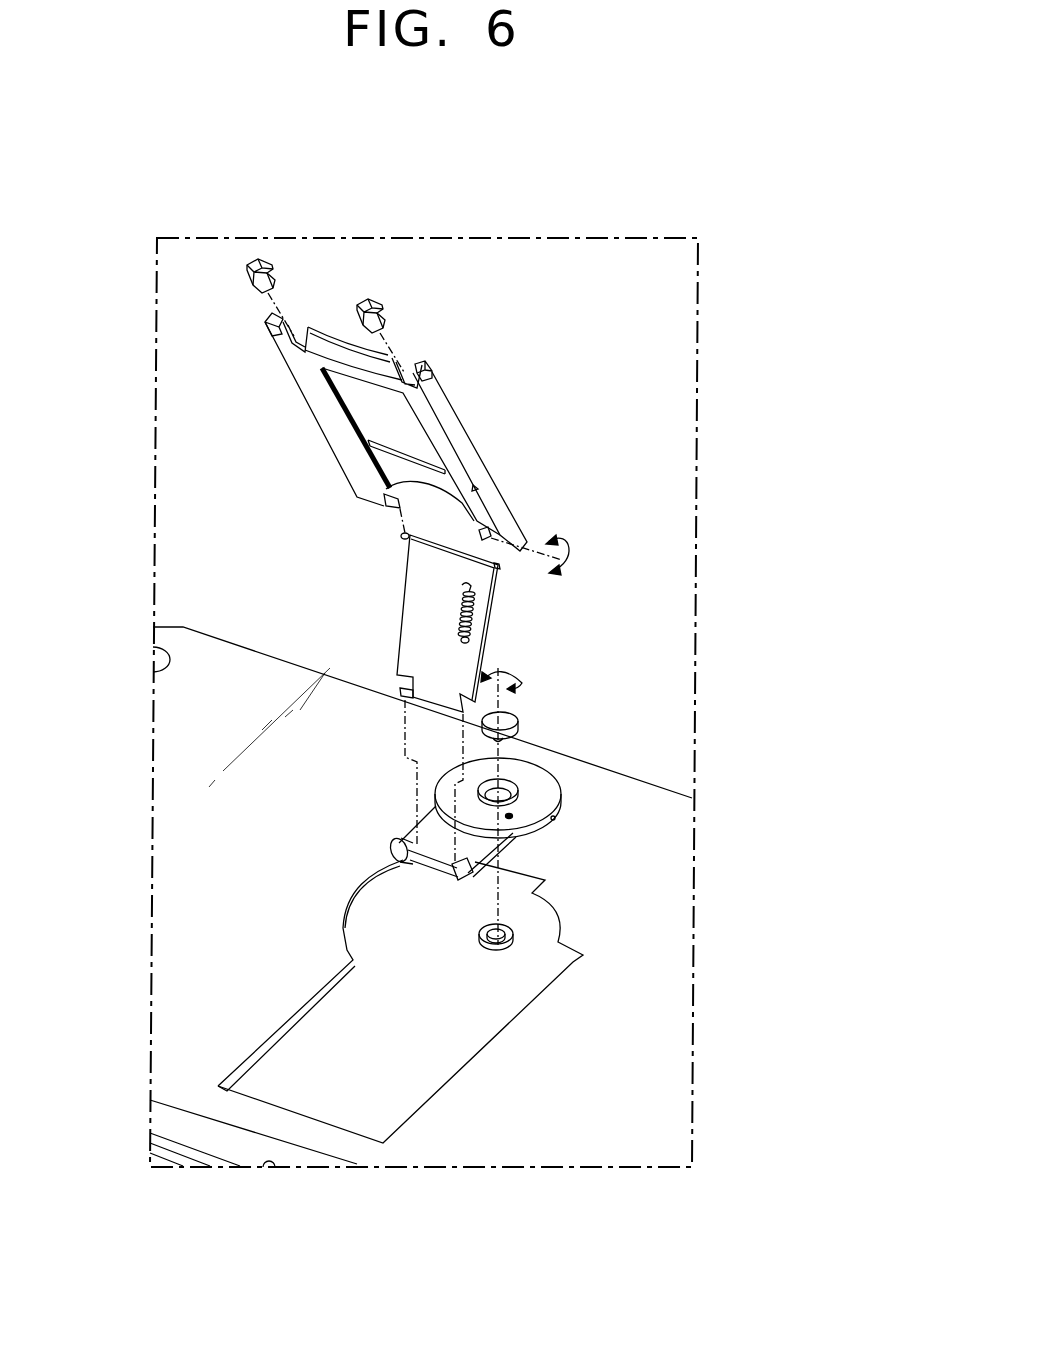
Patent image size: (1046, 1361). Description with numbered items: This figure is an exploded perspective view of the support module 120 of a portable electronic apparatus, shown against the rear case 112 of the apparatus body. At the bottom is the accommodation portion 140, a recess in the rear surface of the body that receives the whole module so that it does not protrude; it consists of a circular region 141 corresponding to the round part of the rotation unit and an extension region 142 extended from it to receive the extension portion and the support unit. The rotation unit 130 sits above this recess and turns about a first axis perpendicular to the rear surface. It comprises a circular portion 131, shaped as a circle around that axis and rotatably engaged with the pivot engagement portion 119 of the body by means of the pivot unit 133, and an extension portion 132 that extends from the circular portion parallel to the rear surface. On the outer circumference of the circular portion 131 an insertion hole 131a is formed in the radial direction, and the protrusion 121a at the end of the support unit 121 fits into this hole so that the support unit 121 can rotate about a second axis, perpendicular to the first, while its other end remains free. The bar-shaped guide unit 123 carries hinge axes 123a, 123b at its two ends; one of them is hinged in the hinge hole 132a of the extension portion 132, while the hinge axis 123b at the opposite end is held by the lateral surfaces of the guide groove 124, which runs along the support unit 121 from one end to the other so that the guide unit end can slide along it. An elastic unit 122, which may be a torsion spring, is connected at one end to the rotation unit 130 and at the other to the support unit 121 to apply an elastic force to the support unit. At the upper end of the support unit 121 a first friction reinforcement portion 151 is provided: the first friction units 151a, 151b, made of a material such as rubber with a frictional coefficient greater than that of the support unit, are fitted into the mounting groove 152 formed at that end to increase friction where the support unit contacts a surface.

The rear case 112 is at (640, 1053).
The pivot engagement portion 119 is at (513, 928).
The support module 120 is at (560, 400).
The support unit 121 is at (448, 436).
The protrusion 121a is at (490, 526).
The elastic unit 122 is at (477, 606).
The guide unit 123 is at (435, 686).
The hinge axis 123a is at (403, 697).
The hinge axis 123b is at (401, 538).
The guide groove 124 is at (357, 398).
The rotation unit 130 is at (554, 693).
The circular portion 131 is at (630, 802).
The insertion hole 131a is at (553, 818).
The extension portion 132 is at (432, 853).
The hinge hole 132a is at (398, 858).
The pivot unit 133 is at (515, 720).
The accommodation portion 140 is at (503, 1243).
The circular region 141 is at (440, 950).
The extension region 142 is at (373, 1077).
The first friction reinforcement portion 151 is at (380, 163).
The first friction unit 151a is at (258, 258).
The first friction unit 151b is at (370, 299).
The mounting groove 152 is at (300, 340).